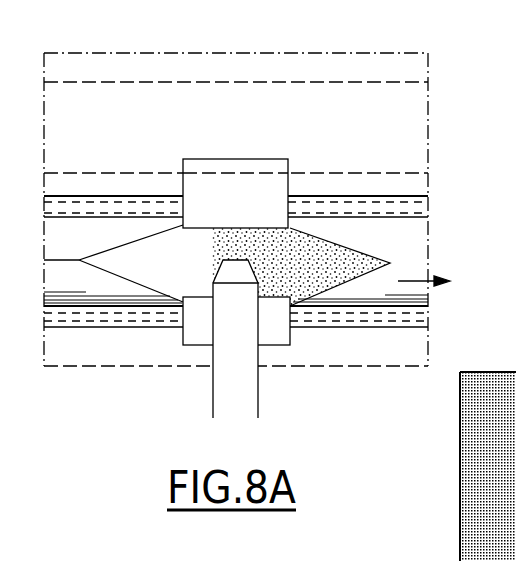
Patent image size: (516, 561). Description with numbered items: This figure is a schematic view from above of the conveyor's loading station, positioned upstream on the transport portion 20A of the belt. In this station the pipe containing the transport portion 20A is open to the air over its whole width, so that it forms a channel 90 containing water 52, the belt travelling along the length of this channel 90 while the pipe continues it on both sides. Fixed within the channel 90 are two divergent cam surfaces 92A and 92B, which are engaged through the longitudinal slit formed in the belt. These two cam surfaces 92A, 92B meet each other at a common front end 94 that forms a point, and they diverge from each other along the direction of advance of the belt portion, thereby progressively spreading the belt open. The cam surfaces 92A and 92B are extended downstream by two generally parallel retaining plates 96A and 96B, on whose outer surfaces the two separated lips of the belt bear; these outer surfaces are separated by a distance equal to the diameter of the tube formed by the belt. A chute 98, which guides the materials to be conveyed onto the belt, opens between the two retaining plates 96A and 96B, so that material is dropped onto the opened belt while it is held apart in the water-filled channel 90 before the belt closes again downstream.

The transport portion 20A is at (77, 300).
The water 52 is at (388, 212).
The channel 90 is at (407, 200).
The divergent cam surface 92A is at (139, 238).
The divergent cam surface 92B is at (134, 285).
The common front end 94 is at (78, 258).
The retaining plate 96A is at (278, 335).
The retaining plate 96B is at (278, 192).
The chute 98 is at (207, 412).